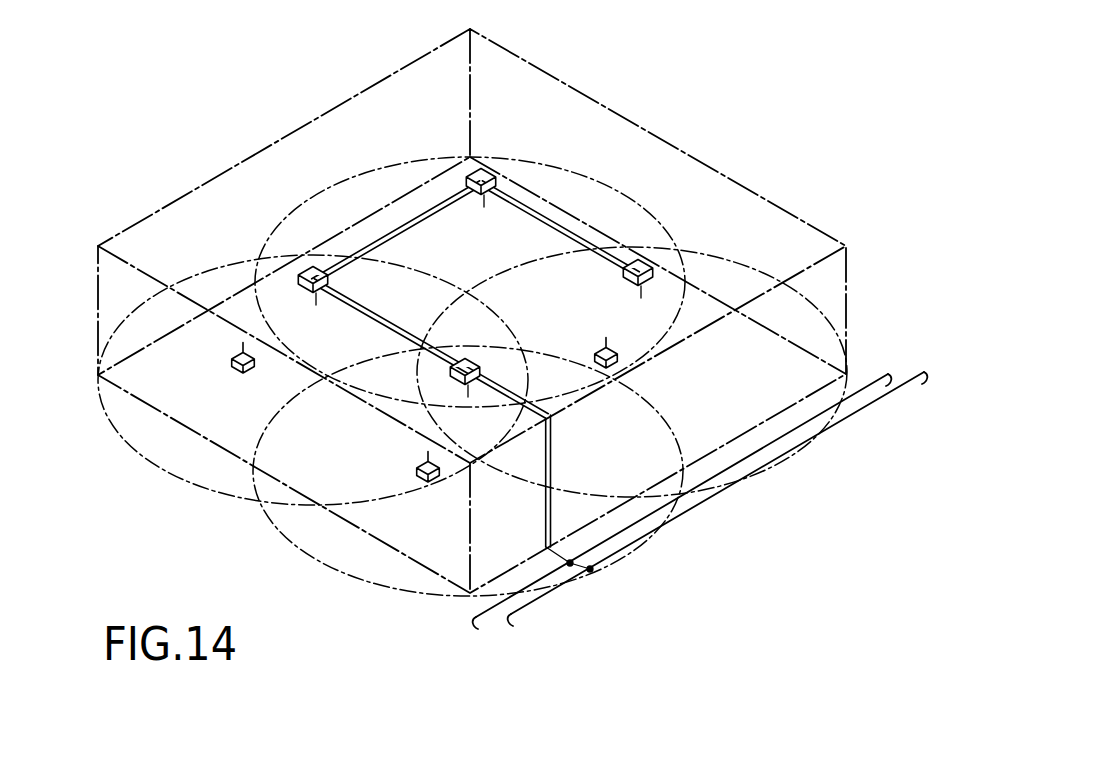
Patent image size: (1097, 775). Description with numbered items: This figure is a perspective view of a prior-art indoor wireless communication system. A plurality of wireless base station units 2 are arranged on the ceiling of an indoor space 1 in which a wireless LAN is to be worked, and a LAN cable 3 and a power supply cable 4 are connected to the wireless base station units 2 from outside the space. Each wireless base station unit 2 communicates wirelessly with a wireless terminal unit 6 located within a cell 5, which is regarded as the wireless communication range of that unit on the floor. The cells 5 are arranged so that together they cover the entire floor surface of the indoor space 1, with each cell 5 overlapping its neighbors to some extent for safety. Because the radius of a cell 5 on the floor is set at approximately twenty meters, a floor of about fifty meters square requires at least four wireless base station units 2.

The indoor space 1 is at (600, 104).
The wireless base station unit 2 is at (478, 199).
The LAN cable 3 is at (537, 603).
The power supply cable 4 is at (491, 612).
The cell 5 is at (323, 187).
The wireless terminal unit 6 is at (234, 363).